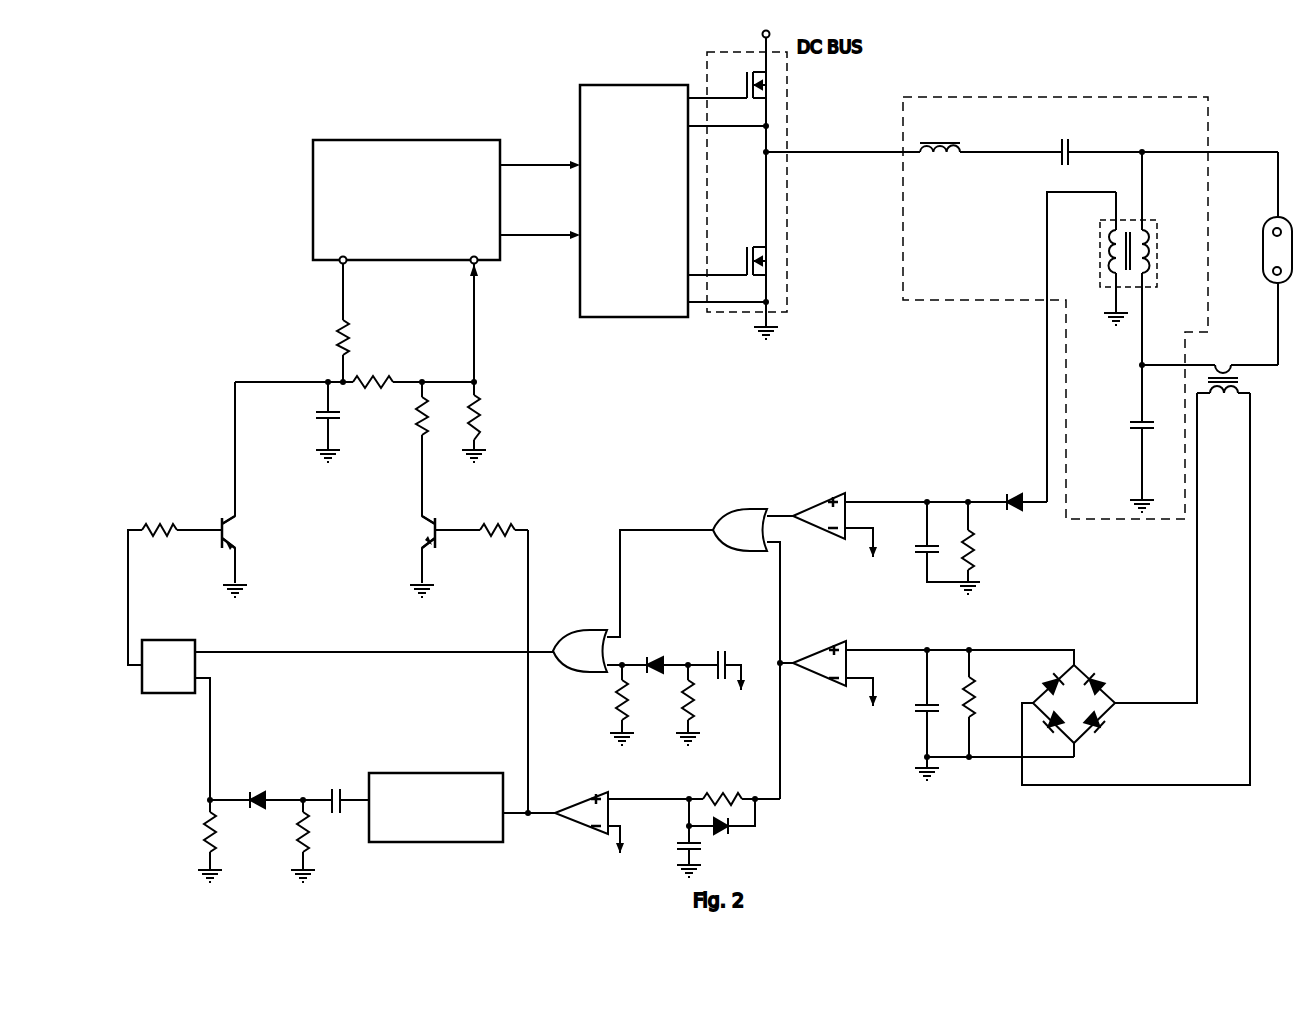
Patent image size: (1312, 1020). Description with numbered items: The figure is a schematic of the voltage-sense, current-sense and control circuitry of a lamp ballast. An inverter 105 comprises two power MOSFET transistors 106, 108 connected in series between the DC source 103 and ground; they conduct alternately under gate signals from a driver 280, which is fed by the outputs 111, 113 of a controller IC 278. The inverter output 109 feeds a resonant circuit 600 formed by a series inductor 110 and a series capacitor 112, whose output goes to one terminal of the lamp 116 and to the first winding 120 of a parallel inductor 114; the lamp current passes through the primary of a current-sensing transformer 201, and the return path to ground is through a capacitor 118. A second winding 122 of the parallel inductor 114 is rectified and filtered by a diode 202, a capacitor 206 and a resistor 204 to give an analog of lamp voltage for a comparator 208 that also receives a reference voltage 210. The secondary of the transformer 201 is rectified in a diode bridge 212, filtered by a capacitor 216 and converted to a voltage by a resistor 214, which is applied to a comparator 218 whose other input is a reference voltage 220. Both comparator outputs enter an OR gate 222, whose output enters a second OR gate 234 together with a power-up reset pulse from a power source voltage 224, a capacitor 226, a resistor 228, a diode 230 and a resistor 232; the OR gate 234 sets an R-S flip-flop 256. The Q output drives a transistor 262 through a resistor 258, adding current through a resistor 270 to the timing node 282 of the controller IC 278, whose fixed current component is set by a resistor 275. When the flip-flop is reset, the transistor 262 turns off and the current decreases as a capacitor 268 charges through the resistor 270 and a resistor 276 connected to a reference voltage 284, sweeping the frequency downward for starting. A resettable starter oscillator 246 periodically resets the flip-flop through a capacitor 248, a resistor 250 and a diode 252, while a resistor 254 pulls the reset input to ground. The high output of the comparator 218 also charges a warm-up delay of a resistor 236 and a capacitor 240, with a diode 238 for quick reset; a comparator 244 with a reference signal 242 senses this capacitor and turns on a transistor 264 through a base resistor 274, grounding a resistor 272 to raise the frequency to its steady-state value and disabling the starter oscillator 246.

The DC source 103 is at (770, 32).
The inverter 105 is at (786, 80).
The power MOSFET transistor 106 is at (747, 88).
The power MOSFET transistor 108 is at (750, 262).
The inverter output 109 is at (800, 154).
The series inductor 110 is at (962, 148).
The controller IC output 111 is at (510, 162).
The series capacitor 112 is at (1058, 148).
The controller IC output 113 is at (512, 232).
The parallel inductor 114 is at (1143, 218).
The lamp 116 is at (1263, 261).
The capacitor 118 is at (1132, 432).
The first winding 120 is at (1148, 272).
The second winding 122 is at (1103, 272).
The current-sensing transformer 201 is at (1223, 362).
The diode 202 is at (1008, 492).
The resistor 204 is at (978, 542).
The capacitor 206 is at (918, 553).
The comparator 208 is at (828, 494).
The reference voltage 210 is at (866, 546).
The diode bridge 212 is at (1085, 660).
The resistor 214 is at (978, 708).
The capacitor 216 is at (918, 713).
The comparator 218 is at (835, 641).
The reference voltage 220 is at (866, 692).
The OR gate 222 is at (750, 508).
The power source voltage 224 is at (745, 688).
The capacitor 226 is at (715, 650).
The resistor 228 is at (700, 705).
The diode 230 is at (650, 684).
The resistor 232 is at (612, 696).
The second OR gate 234 is at (602, 628).
The resistor 236 is at (722, 796).
The diode 238 is at (736, 833).
The capacitor 240 is at (678, 851).
The reference signal 242 is at (612, 843).
The comparator 244 is at (600, 792).
The resettable starter oscillator 246 is at (437, 773).
The capacitor 248 is at (329, 790).
The resistor 250 is at (296, 823).
The diode 252 is at (250, 791).
The resistor 254 is at (201, 821).
The R-S flip-flop 256 is at (190, 640).
The resistor 258 is at (166, 524).
The transistor 262 is at (240, 531).
The transistor 264 is at (428, 536).
The capacitor 268 is at (337, 421).
The resistor 270 is at (373, 378).
The resistor 272 is at (413, 404).
The base resistor 274 is at (488, 522).
The resistor 275 is at (483, 426).
The resistor 276 is at (351, 346).
The controller IC 278 is at (385, 140).
The driver 280 is at (640, 85).
The timing node 282 is at (480, 265).
The reference voltage 284 is at (338, 263).
The resonant circuit 600 is at (1100, 97).